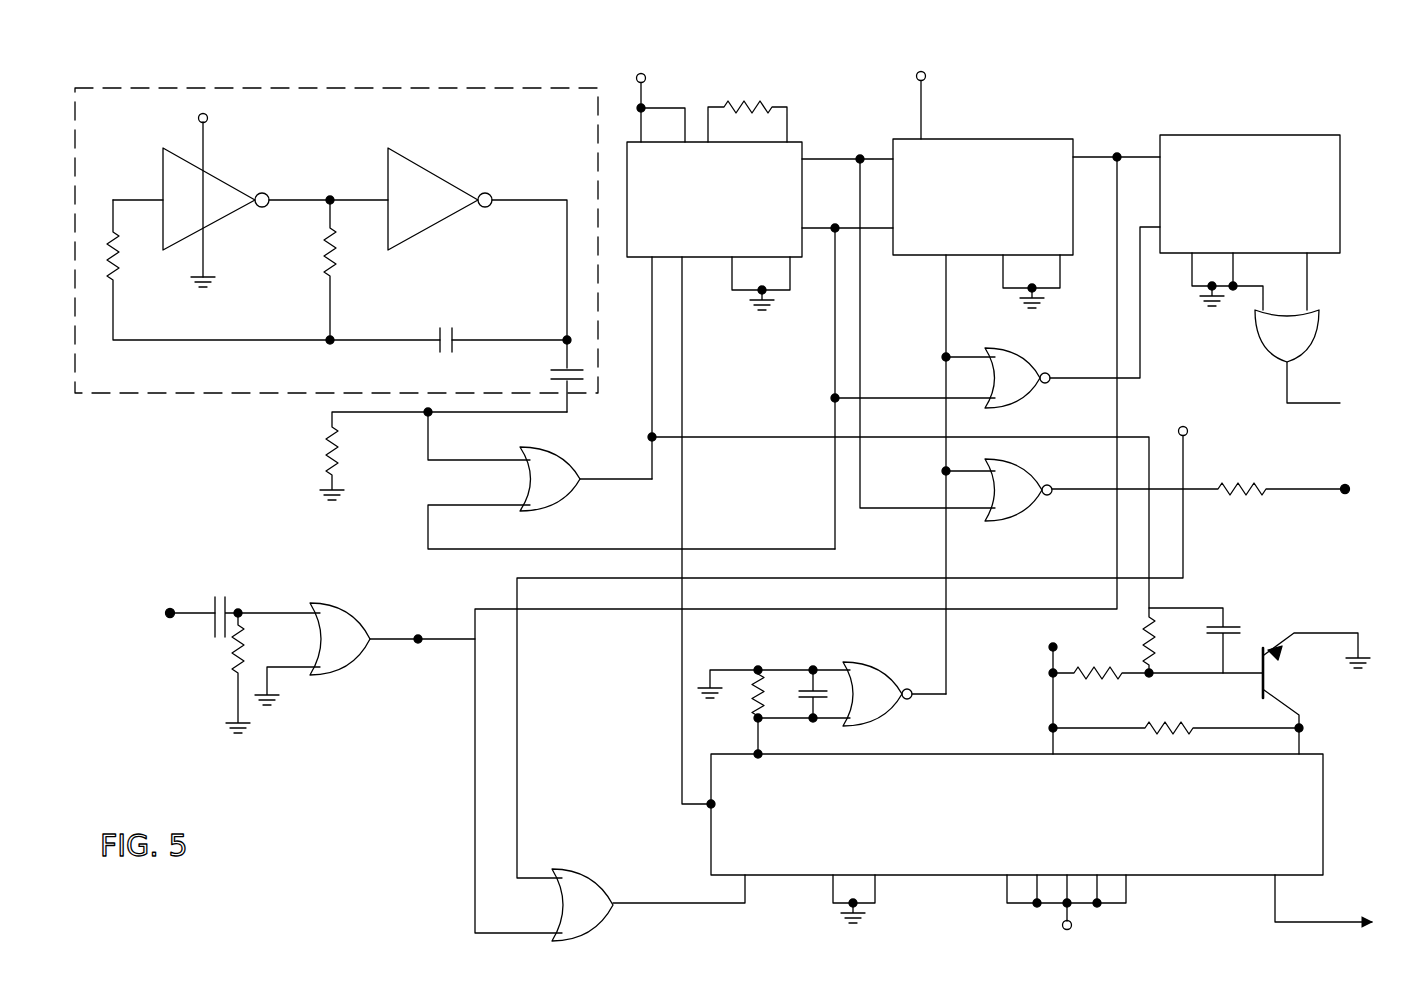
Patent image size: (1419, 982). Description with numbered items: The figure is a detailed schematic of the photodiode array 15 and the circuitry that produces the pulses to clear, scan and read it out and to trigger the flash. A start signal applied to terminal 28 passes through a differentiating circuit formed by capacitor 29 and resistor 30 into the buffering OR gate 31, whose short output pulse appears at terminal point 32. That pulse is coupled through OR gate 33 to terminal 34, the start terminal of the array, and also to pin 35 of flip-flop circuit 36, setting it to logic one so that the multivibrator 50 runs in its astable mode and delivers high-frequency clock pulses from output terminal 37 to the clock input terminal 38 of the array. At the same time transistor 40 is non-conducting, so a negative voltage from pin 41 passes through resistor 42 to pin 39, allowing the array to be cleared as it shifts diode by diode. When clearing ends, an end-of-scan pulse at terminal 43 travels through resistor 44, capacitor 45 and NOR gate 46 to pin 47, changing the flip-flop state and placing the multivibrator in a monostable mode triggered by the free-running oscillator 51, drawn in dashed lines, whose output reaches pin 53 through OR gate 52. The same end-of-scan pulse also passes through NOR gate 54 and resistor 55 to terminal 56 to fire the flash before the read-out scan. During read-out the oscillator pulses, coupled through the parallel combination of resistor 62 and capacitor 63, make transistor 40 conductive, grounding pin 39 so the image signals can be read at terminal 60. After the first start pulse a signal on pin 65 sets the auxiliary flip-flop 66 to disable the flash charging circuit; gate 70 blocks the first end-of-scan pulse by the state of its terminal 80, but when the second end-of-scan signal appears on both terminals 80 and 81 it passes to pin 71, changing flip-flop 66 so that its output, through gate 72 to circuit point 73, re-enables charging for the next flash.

The photodiode array 15 is at (951, 852).
The terminal 28 is at (170, 611).
The capacitor 29 is at (228, 600).
The resistor 30 is at (235, 645).
The OR gate 31 is at (352, 625).
The terminal point 32 is at (420, 645).
The OR gate 33 is at (590, 920).
The terminal 34 is at (748, 880).
The pin 35 is at (1082, 155).
The flip-flop circuit 36 is at (1030, 158).
The output terminal 37 is at (682, 260).
The clock input terminal 38 is at (709, 806).
The pin 39 is at (1302, 728).
The transistor 40 is at (1272, 672).
The pin 41 is at (1050, 647).
The resistor 42 is at (1170, 740).
The terminal 43 is at (760, 757).
The resistor 44 is at (750, 690).
The capacitor 45 is at (805, 690).
The NOR gate 46 is at (875, 675).
The pin 47 is at (942, 258).
The multivibrator 50 is at (792, 152).
The free-running oscillator 51 is at (146, 86).
The OR gate 52 is at (565, 478).
The pin 53 is at (650, 260).
The NOR gate 54 is at (1030, 497).
The resistor 55 is at (1242, 495).
The terminal 56 is at (1347, 485).
The terminal 60 is at (1282, 898).
The resistor 62 is at (1145, 622).
The capacitor 63 is at (1230, 622).
The pin 65 is at (1155, 155).
The auxiliary flip-flop 66 is at (1333, 230).
The gate 70 is at (1018, 370).
The pin 71 is at (1157, 232).
The gate 72 is at (1318, 335).
The circuit point 73 is at (1338, 400).
The terminal 80 is at (967, 355).
The terminal 81 is at (973, 402).